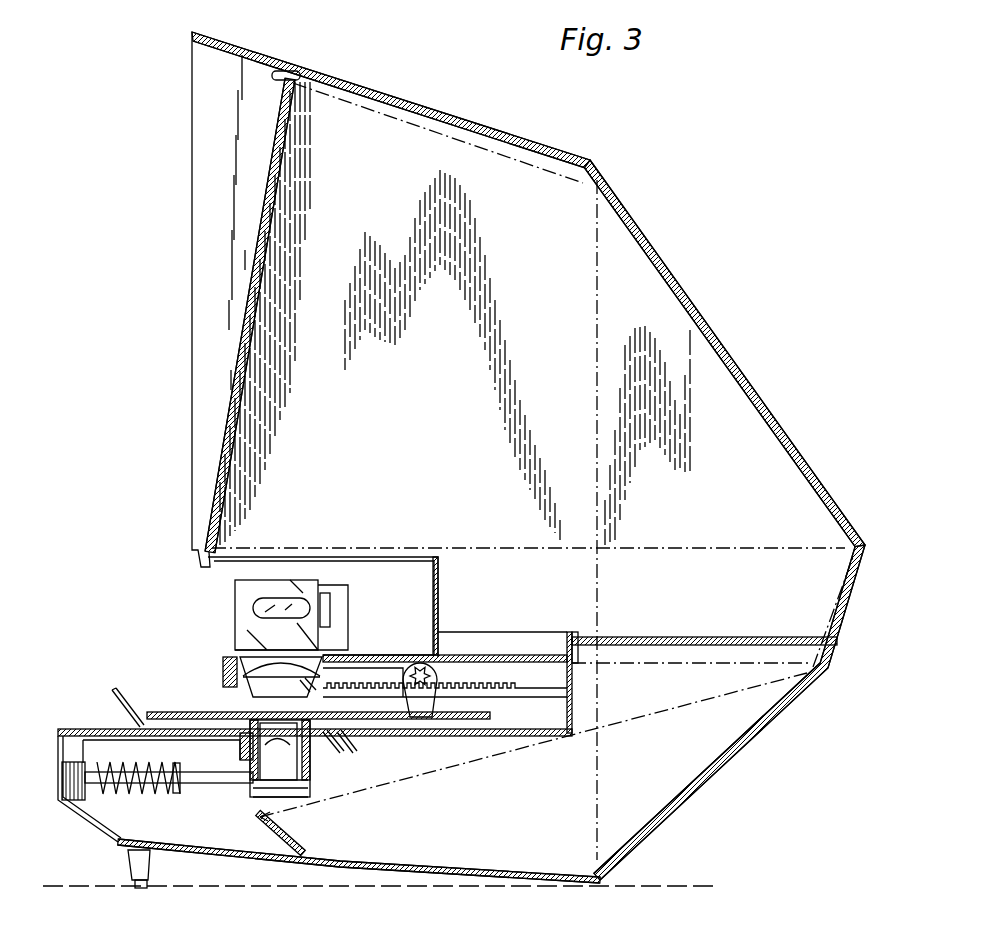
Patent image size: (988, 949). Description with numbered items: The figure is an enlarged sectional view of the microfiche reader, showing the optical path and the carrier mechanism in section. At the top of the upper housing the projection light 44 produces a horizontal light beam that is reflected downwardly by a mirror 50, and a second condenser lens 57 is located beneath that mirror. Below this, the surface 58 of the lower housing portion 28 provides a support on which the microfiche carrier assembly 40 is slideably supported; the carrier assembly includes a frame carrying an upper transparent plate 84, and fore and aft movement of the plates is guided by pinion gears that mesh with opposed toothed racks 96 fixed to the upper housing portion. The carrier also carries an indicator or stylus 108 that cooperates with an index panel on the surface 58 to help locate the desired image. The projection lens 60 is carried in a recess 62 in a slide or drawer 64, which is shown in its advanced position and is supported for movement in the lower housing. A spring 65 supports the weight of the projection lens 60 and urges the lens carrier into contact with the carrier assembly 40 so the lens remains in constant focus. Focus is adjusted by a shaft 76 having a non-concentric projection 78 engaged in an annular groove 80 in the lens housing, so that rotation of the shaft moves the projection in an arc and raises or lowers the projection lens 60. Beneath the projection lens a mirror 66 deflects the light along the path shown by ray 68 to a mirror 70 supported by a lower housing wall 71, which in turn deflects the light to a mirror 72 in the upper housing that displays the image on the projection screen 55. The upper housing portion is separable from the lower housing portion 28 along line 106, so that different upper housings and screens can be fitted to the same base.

The lower housing portion 28 is at (110, 847).
The microfiche carrier assembly 40 is at (140, 691).
The projection light 44 is at (253, 607).
The mirror 50 is at (297, 580).
The projection screen 55 is at (260, 238).
The second condenser lens 57 is at (240, 670).
The surface 58 is at (60, 728).
The projection lens 60 is at (313, 762).
The recess 62 is at (247, 760).
The slide or drawer 64 is at (188, 856).
The spring 65 is at (243, 742).
The mirror 66 is at (272, 852).
The ray 68 is at (527, 747).
The mirror 70 is at (763, 730).
The lower housing wall 71 is at (697, 793).
The mirror 72 is at (730, 353).
The shaft 76 is at (155, 788).
The non-concentric projection 78 is at (259, 792).
The annular groove 80 is at (84, 796).
The upper transparent plate 84 is at (203, 714).
The toothed racks 96 is at (517, 683).
The line 106 is at (713, 640).
The indicator or stylus 108 is at (80, 727).